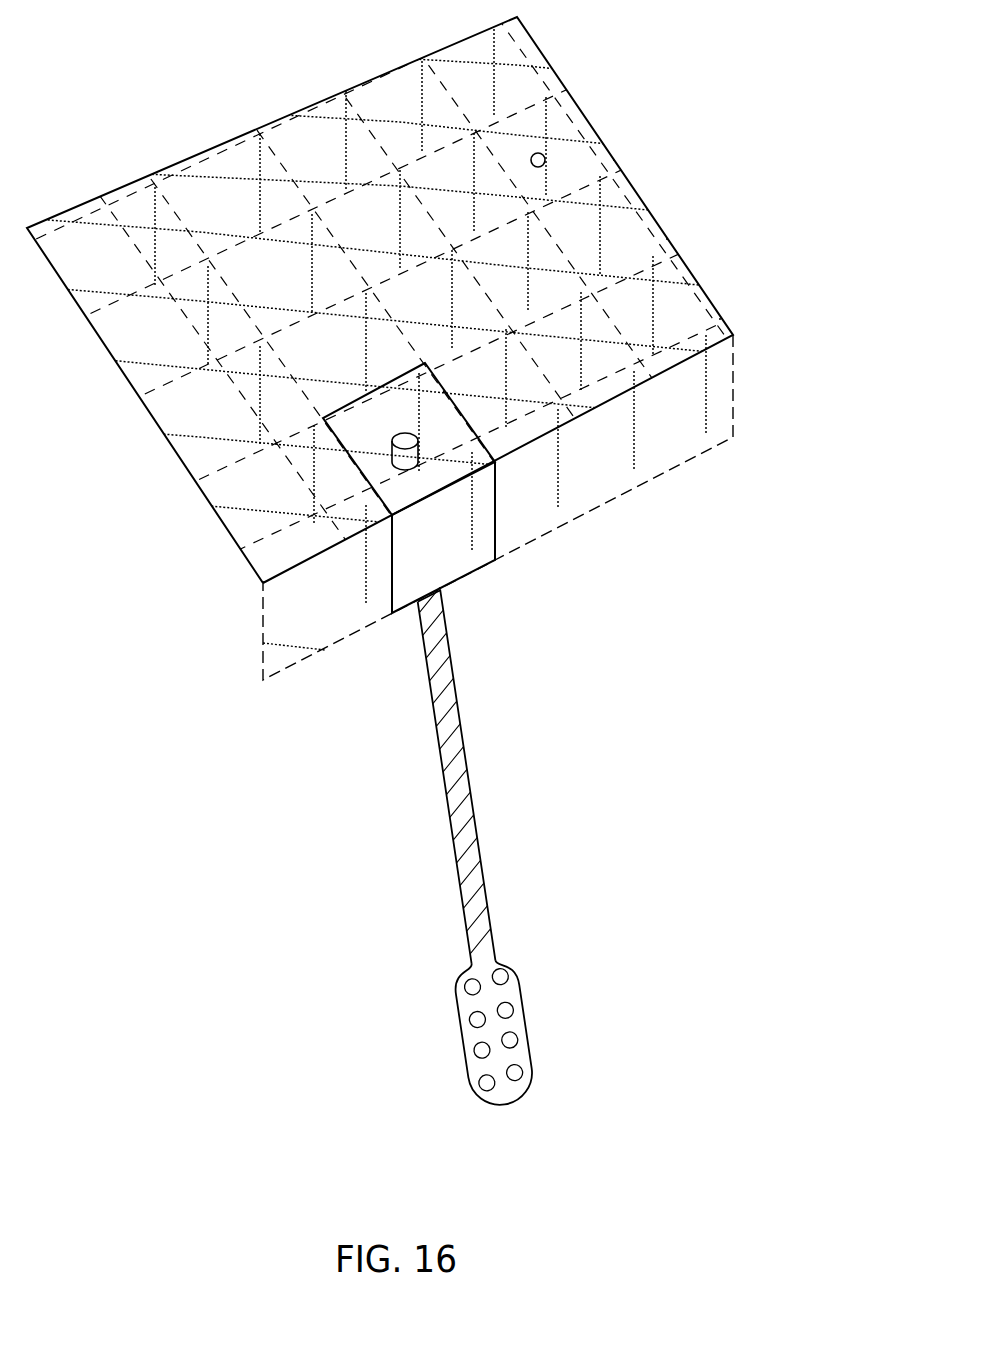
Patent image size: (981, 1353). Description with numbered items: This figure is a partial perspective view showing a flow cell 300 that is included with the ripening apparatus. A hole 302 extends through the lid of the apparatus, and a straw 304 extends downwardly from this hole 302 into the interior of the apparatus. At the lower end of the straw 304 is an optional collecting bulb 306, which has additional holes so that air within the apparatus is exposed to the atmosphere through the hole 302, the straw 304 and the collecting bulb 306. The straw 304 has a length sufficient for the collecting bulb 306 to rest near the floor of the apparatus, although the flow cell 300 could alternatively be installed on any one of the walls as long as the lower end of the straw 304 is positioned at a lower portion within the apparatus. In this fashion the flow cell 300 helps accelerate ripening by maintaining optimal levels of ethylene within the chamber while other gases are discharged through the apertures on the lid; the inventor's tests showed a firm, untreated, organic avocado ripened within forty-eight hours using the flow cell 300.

The hole 302 is at (450, 466).
The flow cell 300 is at (476, 845).
The straw 304 is at (444, 775).
The collecting bulb 306 is at (527, 1025).